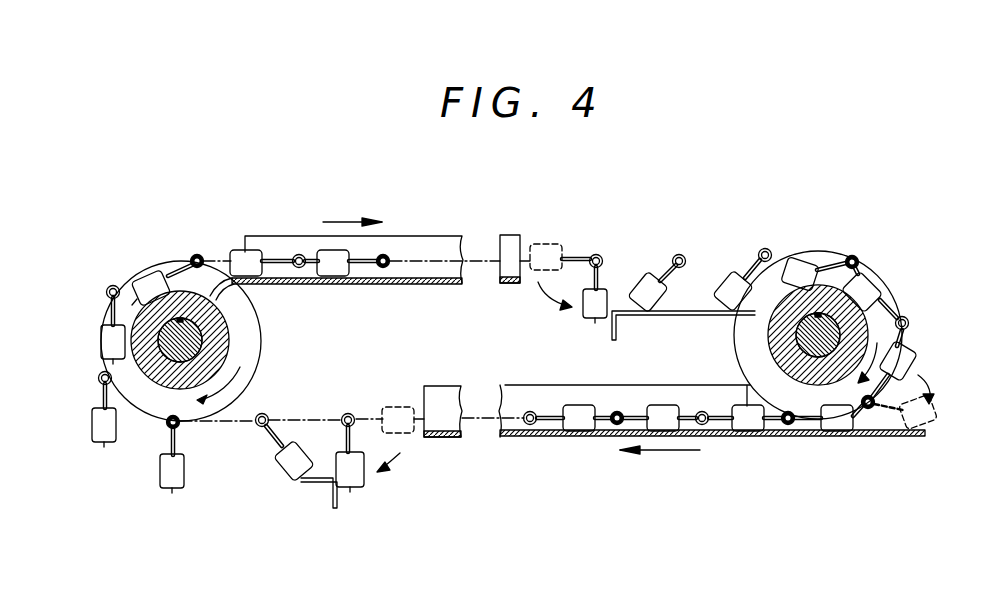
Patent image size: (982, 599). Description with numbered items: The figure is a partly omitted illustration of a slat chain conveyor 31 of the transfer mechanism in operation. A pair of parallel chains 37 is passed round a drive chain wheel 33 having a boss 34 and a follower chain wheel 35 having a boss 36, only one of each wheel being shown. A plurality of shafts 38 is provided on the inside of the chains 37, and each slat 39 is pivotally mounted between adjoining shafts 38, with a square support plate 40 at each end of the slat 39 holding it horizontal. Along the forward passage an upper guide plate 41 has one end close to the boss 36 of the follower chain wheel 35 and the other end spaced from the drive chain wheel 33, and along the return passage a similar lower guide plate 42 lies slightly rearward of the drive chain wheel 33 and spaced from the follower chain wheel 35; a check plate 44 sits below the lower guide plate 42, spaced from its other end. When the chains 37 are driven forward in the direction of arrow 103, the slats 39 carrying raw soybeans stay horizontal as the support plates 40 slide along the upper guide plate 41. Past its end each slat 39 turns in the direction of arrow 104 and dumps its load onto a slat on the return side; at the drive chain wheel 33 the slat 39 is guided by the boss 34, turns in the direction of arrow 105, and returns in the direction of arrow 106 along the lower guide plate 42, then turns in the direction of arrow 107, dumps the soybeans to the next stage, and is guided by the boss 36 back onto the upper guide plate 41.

The slat chain conveyor 31 is at (734, 193).
The drive chain wheel 33 is at (833, 258).
The boss 34 is at (860, 327).
The follower chain wheel 35 is at (255, 354).
The boss 36 is at (167, 378).
The chain 37 is at (437, 236).
The shaft 38 is at (596, 254).
The slat 39 is at (613, 263).
The support plate 40 is at (327, 278).
The upper guide plate 41 is at (412, 287).
The lower guide plate 42 is at (707, 437).
The check plate 44 is at (332, 505).
The arrow 103 is at (350, 222).
The arrow 104 is at (546, 300).
The arrow 105 is at (922, 378).
The arrow 106 is at (660, 452).
The arrow 107 is at (396, 458).